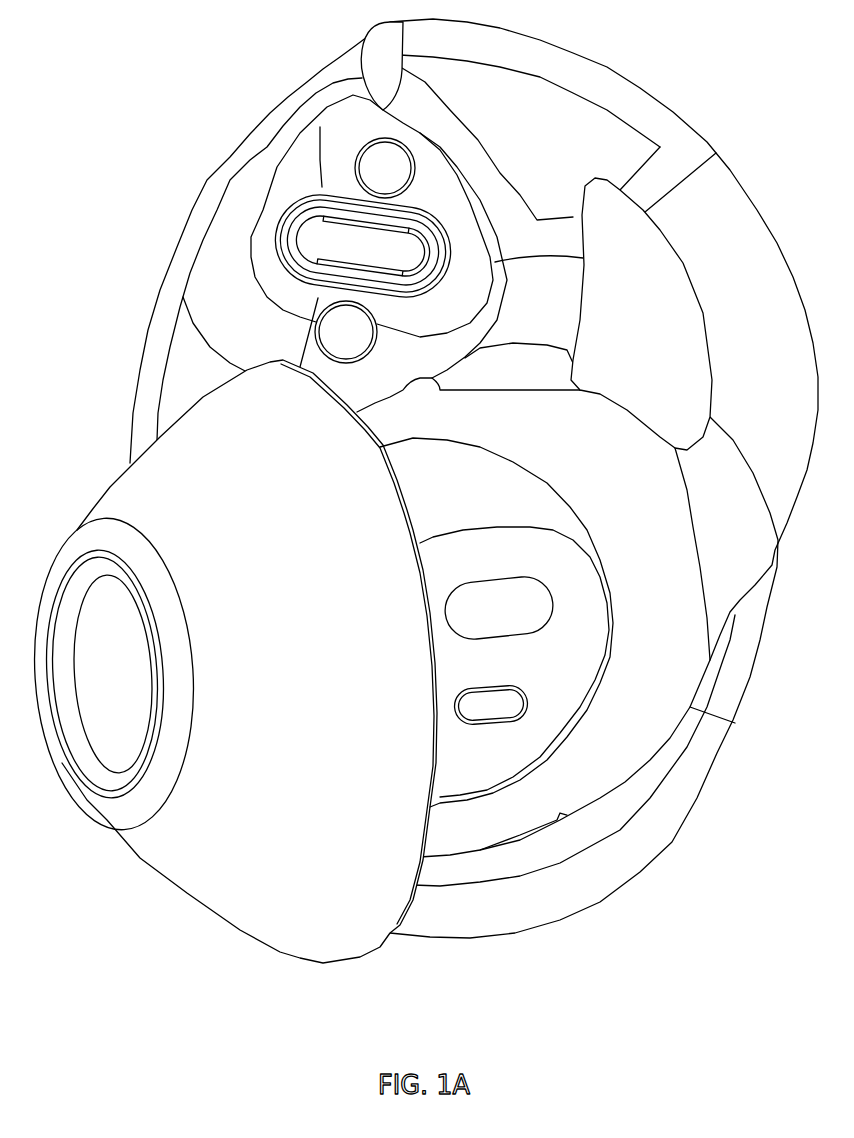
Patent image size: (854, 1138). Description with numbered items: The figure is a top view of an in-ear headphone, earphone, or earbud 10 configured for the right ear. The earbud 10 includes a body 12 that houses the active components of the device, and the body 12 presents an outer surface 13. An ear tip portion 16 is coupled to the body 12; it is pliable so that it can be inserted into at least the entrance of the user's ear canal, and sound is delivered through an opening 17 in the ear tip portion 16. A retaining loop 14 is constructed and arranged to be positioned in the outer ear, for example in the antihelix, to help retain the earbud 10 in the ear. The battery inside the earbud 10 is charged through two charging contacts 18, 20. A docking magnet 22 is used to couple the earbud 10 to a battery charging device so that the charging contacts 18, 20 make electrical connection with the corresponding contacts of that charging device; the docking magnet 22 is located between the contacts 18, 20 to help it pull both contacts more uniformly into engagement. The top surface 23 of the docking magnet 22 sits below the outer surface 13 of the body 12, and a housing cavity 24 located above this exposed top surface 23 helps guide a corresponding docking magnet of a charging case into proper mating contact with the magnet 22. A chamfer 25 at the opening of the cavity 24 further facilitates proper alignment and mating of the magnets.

The earbud 10 is at (116, 378).
The body 12 is at (234, 203).
The outer surface 13 is at (222, 238).
The retaining loop 14 is at (628, 98).
The ear tip portion 16 is at (278, 930).
The opening 17 is at (115, 742).
The charging contact 18 is at (336, 322).
The charging contact 20 is at (378, 163).
The docking magnet 22 is at (359, 216).
The top surface 23 is at (366, 254).
The housing cavity 24 is at (292, 209).
The chamfer 25 is at (285, 260).